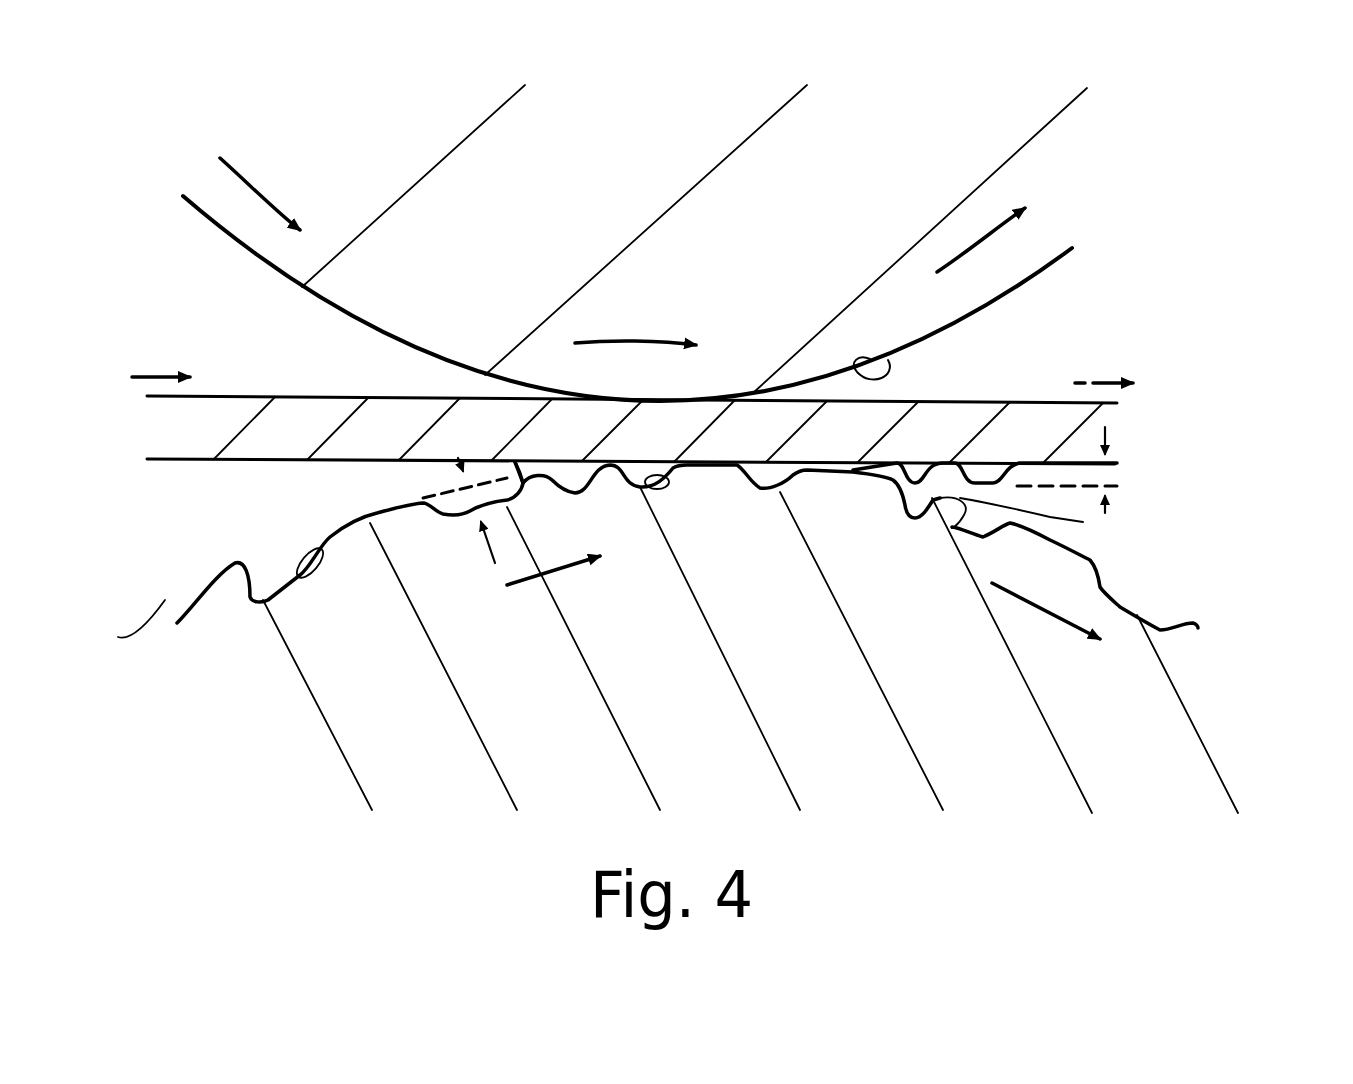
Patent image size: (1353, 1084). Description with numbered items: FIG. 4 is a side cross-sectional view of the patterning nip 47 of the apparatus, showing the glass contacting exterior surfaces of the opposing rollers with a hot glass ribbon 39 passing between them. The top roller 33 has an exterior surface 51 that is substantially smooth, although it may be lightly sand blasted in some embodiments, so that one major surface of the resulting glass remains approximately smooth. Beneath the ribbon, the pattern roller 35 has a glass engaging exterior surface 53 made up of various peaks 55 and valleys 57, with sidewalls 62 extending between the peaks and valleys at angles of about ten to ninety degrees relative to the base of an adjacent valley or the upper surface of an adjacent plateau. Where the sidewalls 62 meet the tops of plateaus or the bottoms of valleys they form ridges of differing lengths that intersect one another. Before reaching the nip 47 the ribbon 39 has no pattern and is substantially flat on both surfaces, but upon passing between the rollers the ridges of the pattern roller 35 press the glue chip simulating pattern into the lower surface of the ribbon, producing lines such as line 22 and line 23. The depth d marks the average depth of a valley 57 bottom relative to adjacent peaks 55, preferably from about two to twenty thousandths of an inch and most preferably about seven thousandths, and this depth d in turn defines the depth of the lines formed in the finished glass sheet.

The line 22 is at (1083, 522).
The line 23 is at (927, 462).
The top roller 33 is at (953, 303).
The pattern roller 35 is at (1093, 604).
The glass ribbon 39 is at (235, 410).
The nip 47 is at (314, 492).
The exterior surface of top roller 51 is at (888, 360).
The exterior surface of pattern roller 53 is at (300, 573).
The peaks 55 is at (607, 477).
The valleys 57 is at (705, 513).
The sidewalls 62 is at (515, 462).
The depth d is at (462, 528).